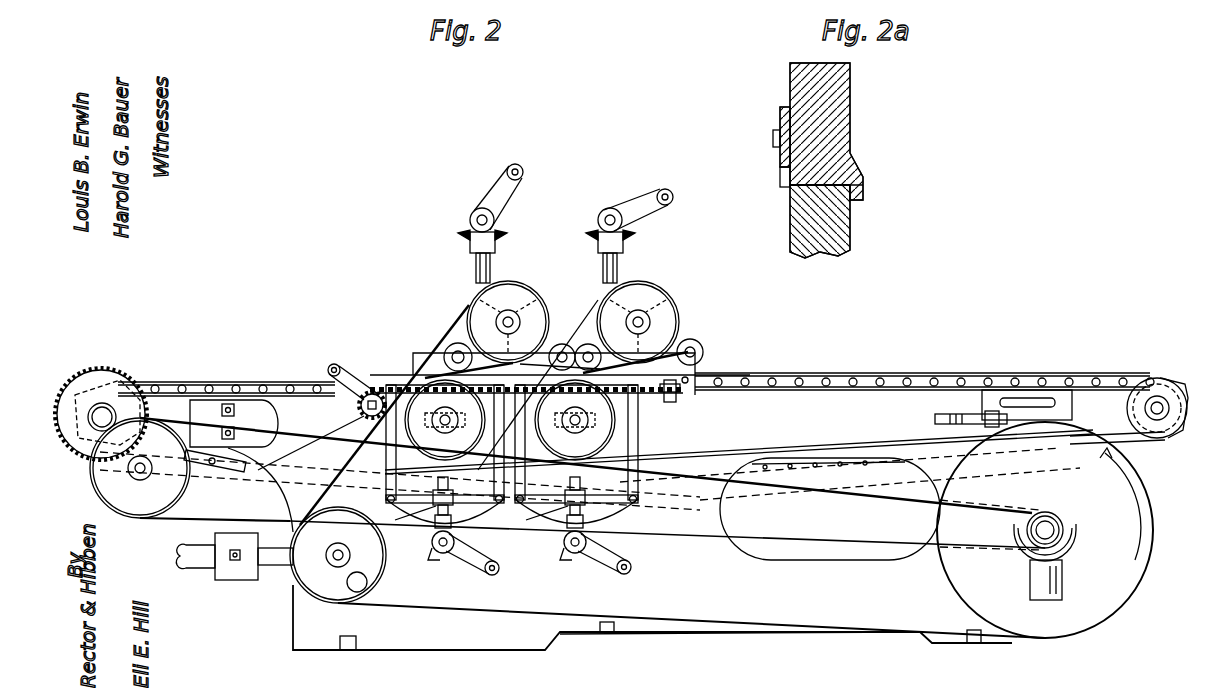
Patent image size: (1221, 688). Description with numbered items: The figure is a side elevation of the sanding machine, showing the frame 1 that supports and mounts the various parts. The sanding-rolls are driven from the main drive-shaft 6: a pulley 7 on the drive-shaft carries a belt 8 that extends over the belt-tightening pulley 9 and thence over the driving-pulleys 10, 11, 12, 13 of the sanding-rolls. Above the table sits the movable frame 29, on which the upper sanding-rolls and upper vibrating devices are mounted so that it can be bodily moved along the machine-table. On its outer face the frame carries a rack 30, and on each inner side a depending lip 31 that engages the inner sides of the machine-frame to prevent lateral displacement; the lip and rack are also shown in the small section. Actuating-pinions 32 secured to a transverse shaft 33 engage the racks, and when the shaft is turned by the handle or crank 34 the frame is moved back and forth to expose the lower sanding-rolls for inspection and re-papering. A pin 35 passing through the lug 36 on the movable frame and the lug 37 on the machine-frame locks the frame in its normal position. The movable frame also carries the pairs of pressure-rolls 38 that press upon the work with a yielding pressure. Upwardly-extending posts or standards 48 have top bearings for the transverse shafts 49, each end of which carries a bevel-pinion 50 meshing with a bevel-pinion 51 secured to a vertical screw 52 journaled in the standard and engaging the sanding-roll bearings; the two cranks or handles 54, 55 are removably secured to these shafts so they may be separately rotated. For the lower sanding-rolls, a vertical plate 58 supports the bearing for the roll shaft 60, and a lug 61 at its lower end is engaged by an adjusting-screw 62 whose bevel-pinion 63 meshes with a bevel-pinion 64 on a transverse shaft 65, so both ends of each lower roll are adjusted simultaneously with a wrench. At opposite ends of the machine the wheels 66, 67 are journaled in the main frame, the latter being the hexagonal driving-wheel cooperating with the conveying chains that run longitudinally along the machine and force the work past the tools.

In FIG. 2, the frame 1 is at (652, 611).
In FIG. 2A, the frame 1 is at (842, 230).
In FIG. 2, the main drive-shaft 6 is at (1050, 530).
In FIG. 2, the pulley 7 is at (936, 530).
In FIG. 2, the belt 8 is at (756, 628).
In FIG. 2, the belt-tightening pulley 9 is at (312, 595).
In FIG. 2, the driving-pulley 10 is at (508, 322).
In FIG. 2, the driving-pulley 11 is at (445, 420).
In FIG. 2, the driving-pulley 12 is at (672, 312).
In FIG. 2, the driving-pulley 13 is at (575, 420).
In FIG. 2, the movable frame 29 is at (420, 353).
In FIG. 2A, the movable frame 29 is at (852, 118).
In FIG. 2, the rack 30 is at (400, 376).
In FIG. 2A, the rack 30 is at (786, 163).
In FIG. 2A, the depending lip 31 is at (864, 187).
In FIG. 2, the actuating-pinion 32 is at (311, 443).
In FIG. 2, the transverse shaft 33 is at (359, 408).
In FIG. 2, the handle or crank 34 is at (328, 366).
In FIG. 2, the pin 35 is at (682, 392).
In FIG. 2, the lug 36 is at (680, 392).
In FIG. 2, the lug 37 is at (664, 398).
In FIG. 2, the pressure-rolls 38 is at (450, 344).
In FIG. 2, the posts or standards 48 is at (474, 264).
In FIG. 2, the transverse shaft 49 is at (470, 220).
In FIG. 2, the bevel-pinion 50 is at (497, 220).
In FIG. 2, the bevel-pinion 51 is at (584, 235).
In FIG. 2, the vertical screw 52 is at (602, 268).
In FIG. 2, the crank or handle 54 is at (494, 188).
In FIG. 2, the crank or handle 55 is at (640, 200).
In FIG. 2, the vertical plate 58 is at (512, 454).
In FIG. 2, the shaft 60 is at (508, 397).
In FIG. 2, the lug 61 is at (473, 515).
In FIG. 2, the adjusting-screw 62 is at (448, 485).
In FIG. 2, the bevel-pinion 63 is at (432, 540).
In FIG. 2, the bevel-pinion 64 is at (434, 556).
In FIG. 2, the transverse shaft 65 is at (474, 560).
In FIG. 2, the wheel 66 is at (1172, 436).
In FIG. 2, the driving-wheel 67 is at (88, 432).